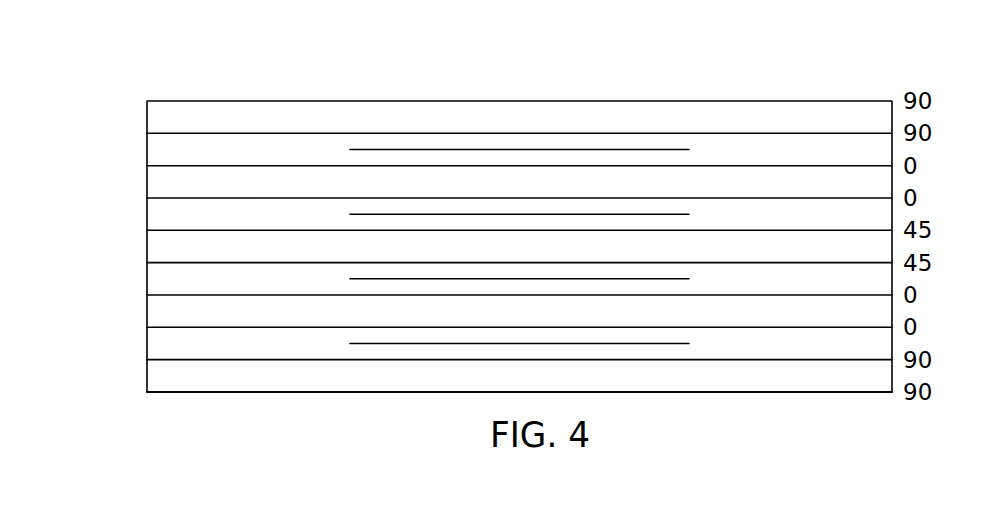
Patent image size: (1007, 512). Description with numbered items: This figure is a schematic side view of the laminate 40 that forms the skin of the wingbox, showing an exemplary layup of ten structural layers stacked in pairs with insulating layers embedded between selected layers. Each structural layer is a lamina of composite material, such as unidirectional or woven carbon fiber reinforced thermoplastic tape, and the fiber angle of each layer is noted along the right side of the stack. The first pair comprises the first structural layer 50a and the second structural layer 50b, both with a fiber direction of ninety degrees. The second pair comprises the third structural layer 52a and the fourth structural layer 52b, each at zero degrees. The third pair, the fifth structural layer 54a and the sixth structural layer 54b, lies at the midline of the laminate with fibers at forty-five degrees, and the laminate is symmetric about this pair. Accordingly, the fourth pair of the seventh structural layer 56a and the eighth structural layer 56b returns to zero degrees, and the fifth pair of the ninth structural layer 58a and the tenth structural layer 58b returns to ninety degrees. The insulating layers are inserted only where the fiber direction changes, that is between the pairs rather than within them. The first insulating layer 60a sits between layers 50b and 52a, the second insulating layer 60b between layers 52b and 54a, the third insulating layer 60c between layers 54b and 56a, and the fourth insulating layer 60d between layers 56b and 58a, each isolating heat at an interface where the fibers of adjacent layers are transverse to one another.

The laminate 40 is at (740, 81).
The first structural layer 50a is at (178, 101).
The second structural layer 50b is at (160, 133).
The third structural layer 52a is at (160, 166).
The fourth structural layer 52b is at (160, 198).
The fifth structural layer 54a is at (160, 230).
The sixth structural layer 54b is at (160, 263).
The seventh structural layer 56a is at (160, 295).
The eighth structural layer 56b is at (160, 327).
The ninth structural layer 58a is at (160, 360).
The tenth structural layer 58b is at (232, 392).
The first insulating layer 60a is at (404, 150).
The second insulating layer 60b is at (360, 214).
The third insulating layer 60c is at (358, 279).
The fourth insulating layer 60d is at (387, 344).